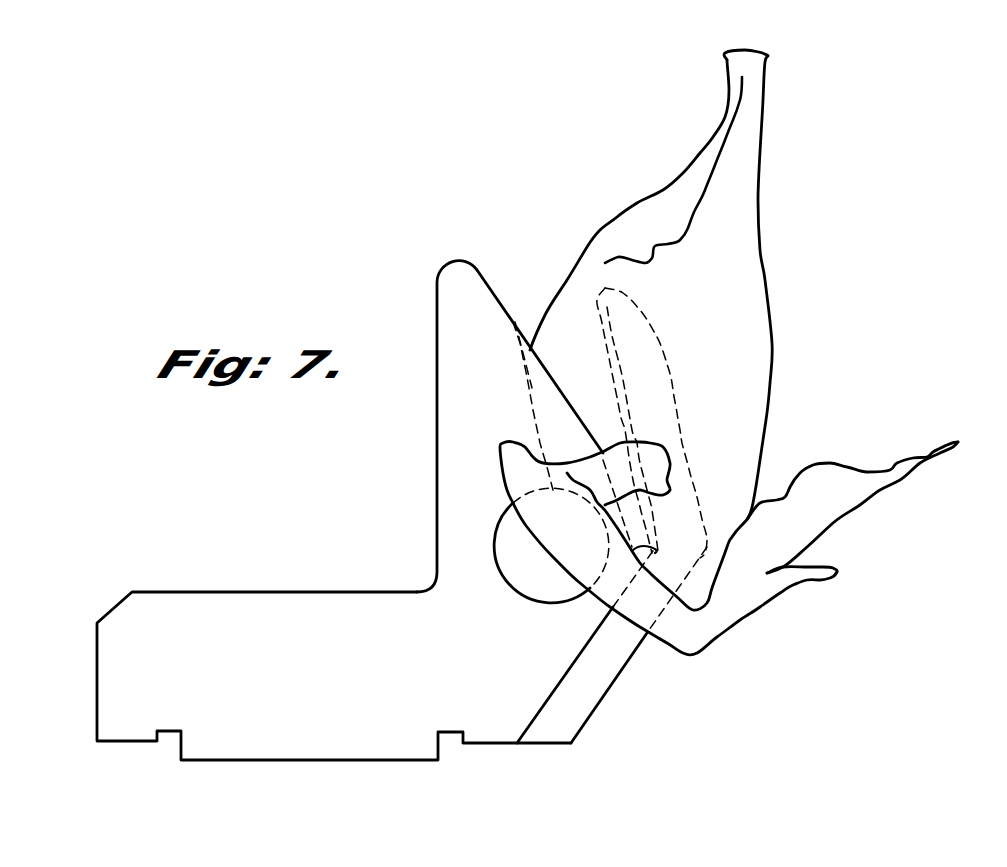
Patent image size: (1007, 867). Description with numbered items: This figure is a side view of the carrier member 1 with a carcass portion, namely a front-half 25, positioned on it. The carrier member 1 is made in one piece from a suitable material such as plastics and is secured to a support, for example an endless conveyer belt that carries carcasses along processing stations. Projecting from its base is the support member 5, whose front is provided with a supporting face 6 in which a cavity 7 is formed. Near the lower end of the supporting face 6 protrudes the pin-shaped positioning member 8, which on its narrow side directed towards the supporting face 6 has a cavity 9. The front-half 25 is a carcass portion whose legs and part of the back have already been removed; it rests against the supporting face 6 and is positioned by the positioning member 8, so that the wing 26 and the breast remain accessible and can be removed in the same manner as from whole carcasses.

The carrier member 1 is at (333, 578).
The support member 5 is at (448, 517).
The supporting face 6 is at (488, 281).
The cavity 7 is at (520, 360).
The pin-shaped positioning member 8 is at (662, 407).
The cavity 9 is at (607, 352).
The front-half 25 is at (557, 258).
The wing 26 is at (787, 324).